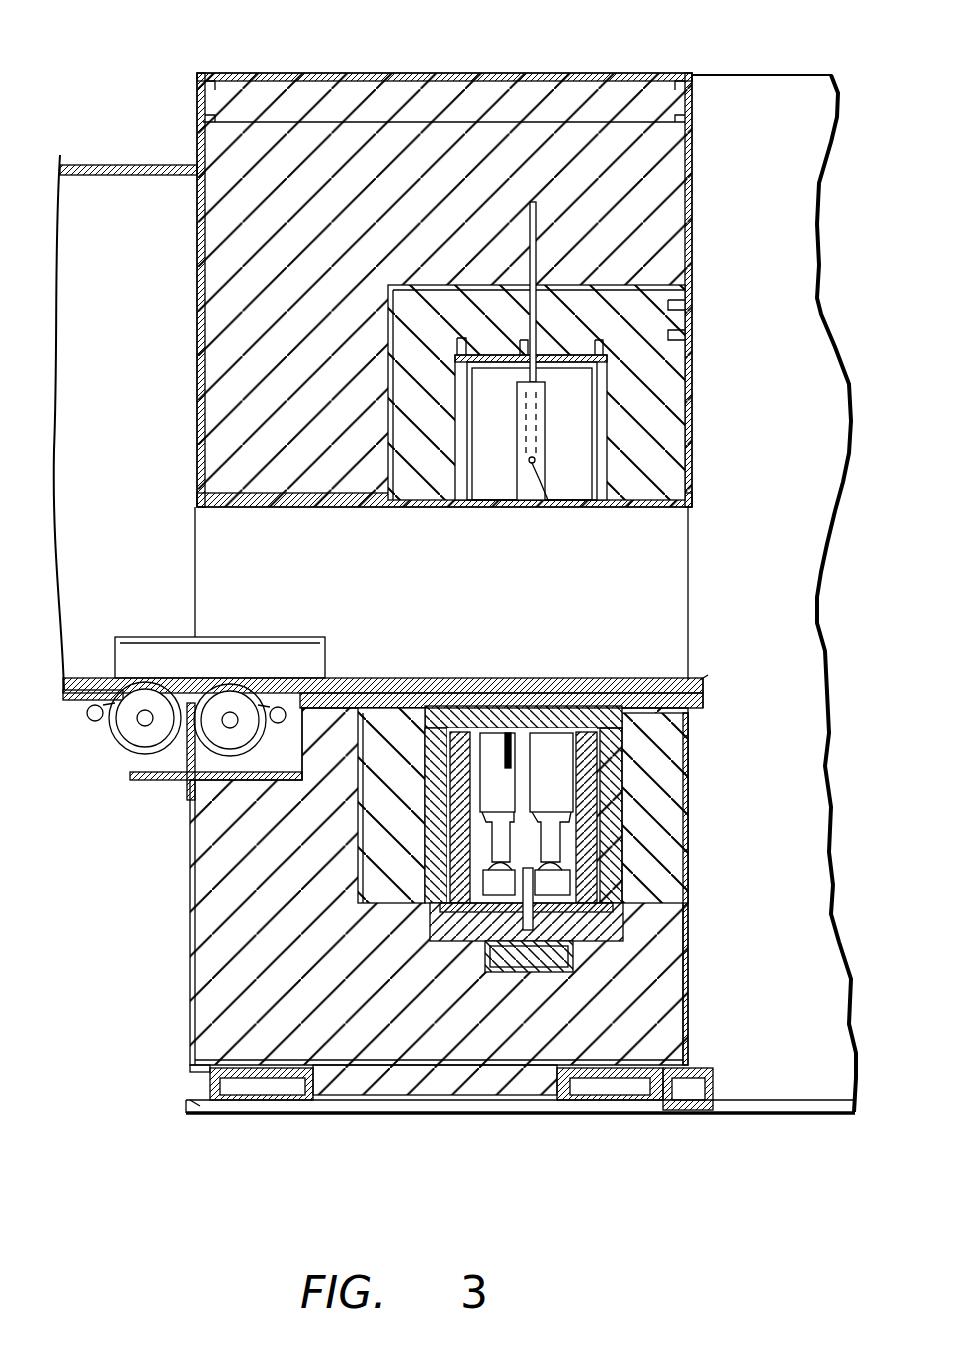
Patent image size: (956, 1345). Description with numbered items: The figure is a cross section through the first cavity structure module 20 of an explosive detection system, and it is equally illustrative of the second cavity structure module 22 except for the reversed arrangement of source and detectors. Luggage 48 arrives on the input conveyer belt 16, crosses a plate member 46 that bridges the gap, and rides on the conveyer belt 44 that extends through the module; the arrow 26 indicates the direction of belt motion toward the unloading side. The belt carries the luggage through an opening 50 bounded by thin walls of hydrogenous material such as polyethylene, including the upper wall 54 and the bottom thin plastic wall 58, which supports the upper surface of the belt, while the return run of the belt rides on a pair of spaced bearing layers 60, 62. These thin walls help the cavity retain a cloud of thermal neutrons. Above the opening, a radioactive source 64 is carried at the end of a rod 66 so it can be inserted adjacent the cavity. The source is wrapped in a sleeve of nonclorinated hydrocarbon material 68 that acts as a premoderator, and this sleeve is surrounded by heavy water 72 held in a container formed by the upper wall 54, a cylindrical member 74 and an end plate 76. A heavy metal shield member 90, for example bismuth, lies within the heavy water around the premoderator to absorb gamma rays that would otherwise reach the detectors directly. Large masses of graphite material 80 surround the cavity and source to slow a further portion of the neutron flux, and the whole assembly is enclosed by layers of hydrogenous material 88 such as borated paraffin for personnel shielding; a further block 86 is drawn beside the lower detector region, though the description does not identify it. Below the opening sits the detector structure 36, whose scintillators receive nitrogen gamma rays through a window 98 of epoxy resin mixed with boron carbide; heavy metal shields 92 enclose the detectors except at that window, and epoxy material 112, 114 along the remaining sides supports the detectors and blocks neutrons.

The input conveyer belt 16 is at (97, 680).
The first cavity structure module 20 is at (358, 56).
The second cavity structure module 22 is at (785, 75).
The arrow 26 is at (143, 165).
The detector structure 36 is at (505, 680).
The conveyer belt 44 is at (282, 678).
The plate member 46 is at (192, 678).
The luggage 48 is at (263, 637).
The opening 50 is at (523, 642).
The upper wall 54 is at (494, 507).
The bottom thin plastic wall 58 is at (597, 680).
The bearing layer 60 is at (615, 692).
The bearing layer 62 is at (652, 692).
The radioactive source 64 is at (537, 507).
The rod 66 is at (536, 228).
The sleeve of nonclorinated hydrocarbon material 68 is at (548, 422).
The heavy water 72 is at (478, 455).
The cylindrical member 74 is at (465, 505).
The end plate 76 is at (503, 370).
The graphite material 80 is at (665, 385).
The shield block 86 is at (392, 720).
The layers of hydrogenous material 88 is at (258, 215).
The shield member 90 is at (586, 507).
The shields 92 is at (460, 700).
The window 98 is at (551, 692).
The epoxy material 112 is at (412, 705).
The epoxy material 114 is at (688, 746).